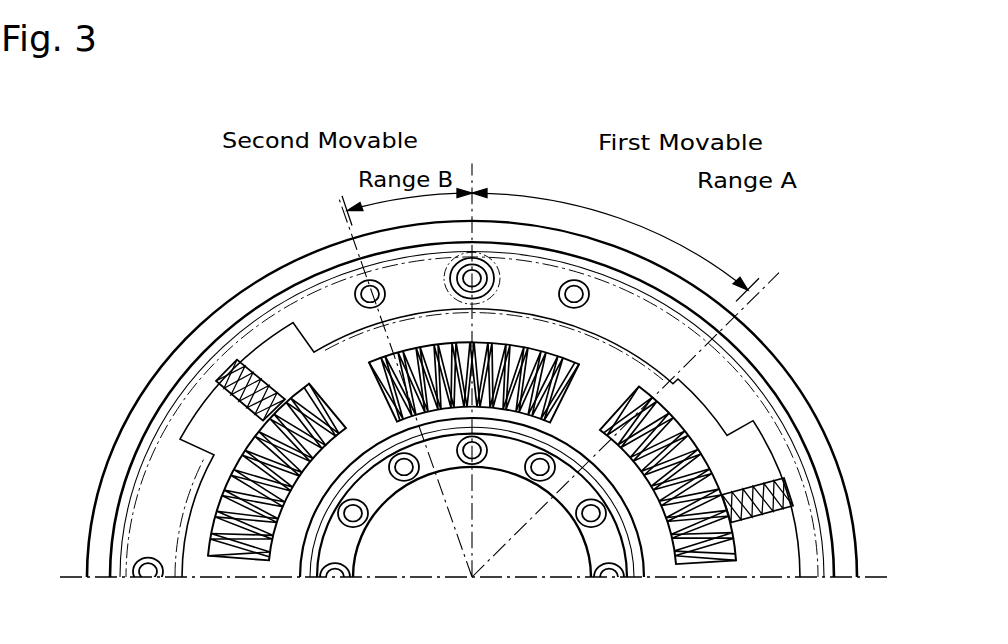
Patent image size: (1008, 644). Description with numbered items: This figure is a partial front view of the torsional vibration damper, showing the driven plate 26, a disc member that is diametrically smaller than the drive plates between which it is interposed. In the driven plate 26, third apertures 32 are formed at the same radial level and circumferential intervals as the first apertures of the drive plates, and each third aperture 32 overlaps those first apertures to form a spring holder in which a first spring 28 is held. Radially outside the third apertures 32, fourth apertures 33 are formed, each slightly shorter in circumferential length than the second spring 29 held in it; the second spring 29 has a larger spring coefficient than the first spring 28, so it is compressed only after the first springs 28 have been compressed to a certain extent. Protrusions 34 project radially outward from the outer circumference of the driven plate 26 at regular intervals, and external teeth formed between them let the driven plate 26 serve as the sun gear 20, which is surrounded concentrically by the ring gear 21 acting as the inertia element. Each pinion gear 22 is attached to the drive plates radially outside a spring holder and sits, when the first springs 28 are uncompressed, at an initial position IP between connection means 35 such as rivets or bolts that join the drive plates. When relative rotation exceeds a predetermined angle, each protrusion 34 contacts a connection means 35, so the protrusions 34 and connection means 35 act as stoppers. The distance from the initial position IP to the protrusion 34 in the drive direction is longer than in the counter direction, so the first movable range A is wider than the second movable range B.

The sun gear 20 is at (707, 340).
The ring gear 21 is at (753, 375).
The pinion gear 22 is at (481, 258).
The driven plate 26 is at (593, 380).
The first spring 28 is at (227, 515).
The second spring 29 is at (245, 372).
The third aperture 32 is at (240, 472).
The fourth aperture 33 is at (205, 412).
The protrusion 34 is at (220, 417).
The connection means 35 is at (359, 285).